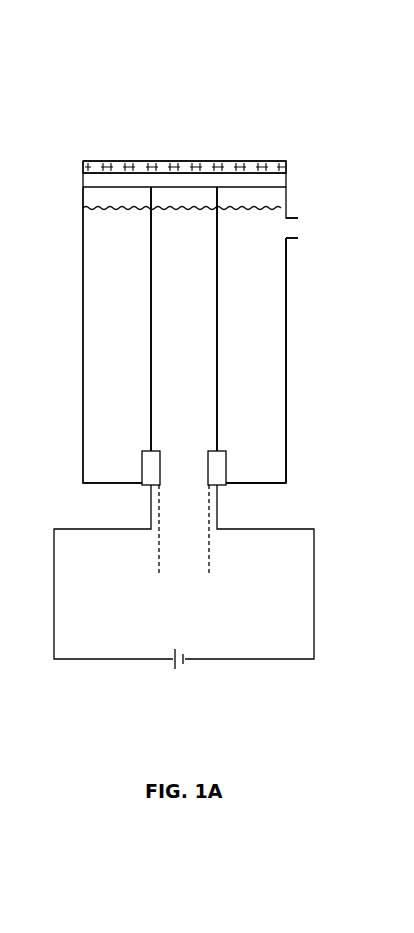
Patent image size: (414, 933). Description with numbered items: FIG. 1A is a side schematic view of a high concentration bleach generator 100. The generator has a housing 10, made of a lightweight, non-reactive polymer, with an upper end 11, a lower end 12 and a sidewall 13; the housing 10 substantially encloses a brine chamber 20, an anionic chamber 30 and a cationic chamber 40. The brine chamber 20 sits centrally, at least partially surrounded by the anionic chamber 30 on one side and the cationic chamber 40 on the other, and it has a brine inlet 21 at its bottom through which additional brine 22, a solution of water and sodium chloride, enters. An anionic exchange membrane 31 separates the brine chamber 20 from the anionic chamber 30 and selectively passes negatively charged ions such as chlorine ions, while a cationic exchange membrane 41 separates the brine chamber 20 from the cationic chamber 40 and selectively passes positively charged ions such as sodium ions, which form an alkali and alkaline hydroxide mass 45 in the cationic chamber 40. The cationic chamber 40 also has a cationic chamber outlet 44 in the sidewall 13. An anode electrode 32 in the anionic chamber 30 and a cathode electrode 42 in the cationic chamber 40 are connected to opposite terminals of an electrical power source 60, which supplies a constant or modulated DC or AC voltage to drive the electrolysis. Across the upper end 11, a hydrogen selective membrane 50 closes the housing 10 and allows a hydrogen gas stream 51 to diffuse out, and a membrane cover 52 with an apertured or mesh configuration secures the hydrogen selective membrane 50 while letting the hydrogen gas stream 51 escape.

The high concentration bleach generator 100 is at (203, 70).
The housing 10 is at (294, 357).
The upper end 11 is at (287, 185).
The lower end 12 is at (288, 483).
The sidewall 13 is at (287, 397).
The brine chamber 20 is at (195, 303).
The brine inlet 21 is at (193, 485).
The brine 22 is at (183, 207).
The anionic chamber 30 is at (130, 303).
The anionic exchange membrane 31 is at (150, 357).
The anode electrode 32 is at (146, 470).
The cationic chamber 40 is at (264, 303).
The cationic exchange membrane 41 is at (218, 357).
The cathode electrode 42 is at (222, 470).
The cationic chamber outlet 44 is at (291, 232).
The alkali and alkaline hydroxide mass 45 is at (280, 214).
The hydrogen selective membrane 50 is at (97, 178).
The hydrogen gas stream 51 is at (155, 132).
The membrane cover 52 is at (279, 161).
The electrical power source 60 is at (176, 664).